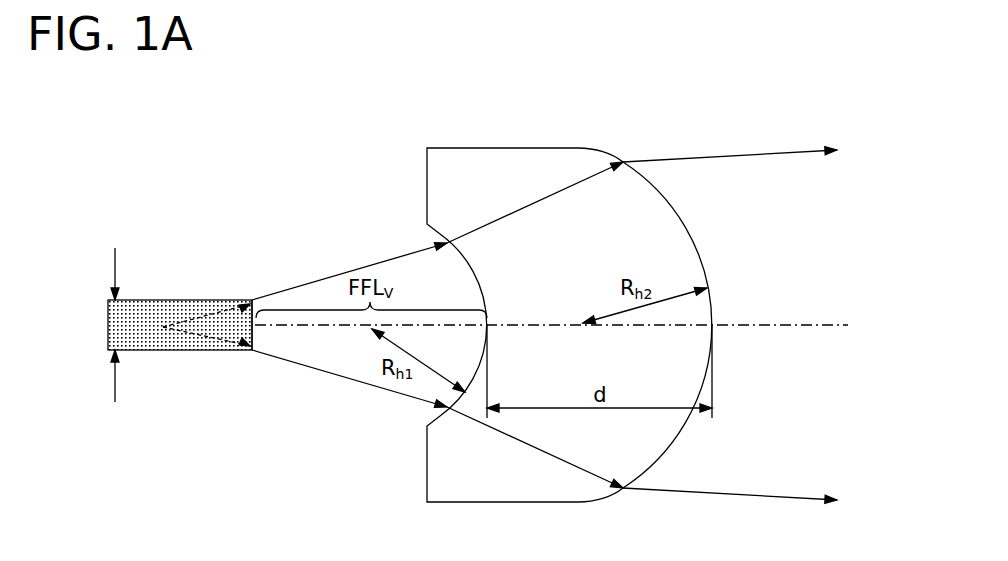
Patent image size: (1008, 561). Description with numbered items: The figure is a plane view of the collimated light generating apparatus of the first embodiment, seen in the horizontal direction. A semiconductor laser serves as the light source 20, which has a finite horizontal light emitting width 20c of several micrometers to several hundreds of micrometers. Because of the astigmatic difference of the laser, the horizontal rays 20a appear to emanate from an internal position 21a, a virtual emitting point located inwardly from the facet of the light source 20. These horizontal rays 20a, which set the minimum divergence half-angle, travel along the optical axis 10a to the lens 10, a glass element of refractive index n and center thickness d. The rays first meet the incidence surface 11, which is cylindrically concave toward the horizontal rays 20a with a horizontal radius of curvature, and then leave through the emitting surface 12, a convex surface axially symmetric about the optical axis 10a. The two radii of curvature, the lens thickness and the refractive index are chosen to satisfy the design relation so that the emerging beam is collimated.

The lens 10 is at (545, 148).
The optical axis 10a is at (577, 326).
The incidence surface 11 is at (480, 279).
The emitting surface 12 is at (696, 240).
The light source 20 is at (178, 300).
The horizontal rays 20a is at (316, 281).
The horizontal light emitting width 20c is at (93, 325).
The internal position 21a is at (164, 328).